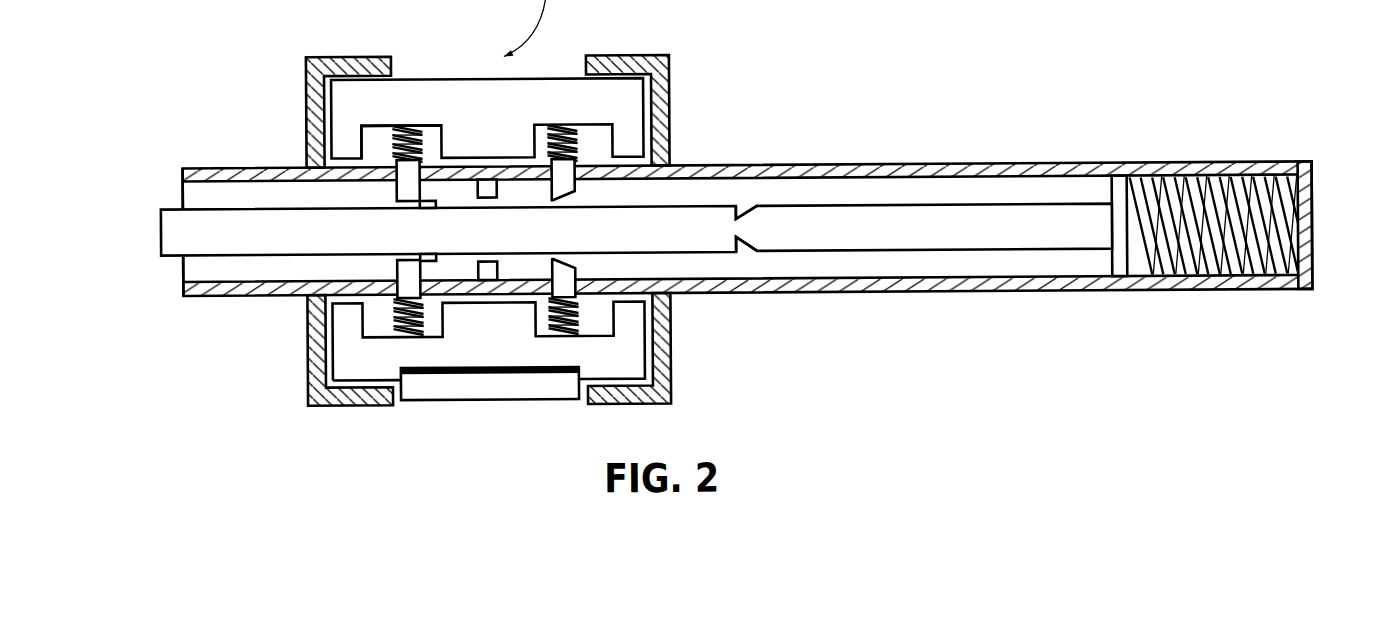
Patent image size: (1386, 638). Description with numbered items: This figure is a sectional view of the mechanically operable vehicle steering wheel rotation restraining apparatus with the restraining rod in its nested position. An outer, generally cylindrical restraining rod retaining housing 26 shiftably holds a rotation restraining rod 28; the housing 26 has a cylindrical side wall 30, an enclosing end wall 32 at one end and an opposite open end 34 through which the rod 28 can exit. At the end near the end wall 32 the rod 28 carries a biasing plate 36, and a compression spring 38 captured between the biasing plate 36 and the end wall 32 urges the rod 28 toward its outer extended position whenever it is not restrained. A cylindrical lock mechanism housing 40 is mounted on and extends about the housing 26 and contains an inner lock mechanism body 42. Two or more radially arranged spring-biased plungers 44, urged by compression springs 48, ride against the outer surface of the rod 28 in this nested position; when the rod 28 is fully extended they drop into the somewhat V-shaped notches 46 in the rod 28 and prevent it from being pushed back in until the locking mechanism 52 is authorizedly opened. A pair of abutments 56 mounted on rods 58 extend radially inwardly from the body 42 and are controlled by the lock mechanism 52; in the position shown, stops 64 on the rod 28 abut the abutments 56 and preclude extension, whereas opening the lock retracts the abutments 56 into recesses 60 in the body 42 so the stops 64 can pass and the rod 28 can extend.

The restraining rod retaining housing 26 is at (827, 147).
The rotation restraining rod 28 is at (162, 219).
The side wall 30 is at (992, 164).
The end wall 32 is at (1312, 221).
The open end 34 is at (182, 188).
The biasing plate 36 is at (1118, 190).
The compression spring 38 is at (1247, 188).
The lock mechanism housing 40 is at (670, 83).
The lock mechanism body 42 is at (478, 86).
The spring-biased plungers 44 is at (560, 124).
The notches 46 is at (745, 248).
The compression springs 48 is at (548, 139).
The locking mechanism 52 is at (507, 387).
The abutments 56 is at (398, 206).
The rods 58 is at (409, 123).
The recesses 60 is at (379, 123).
The stops 64 is at (432, 201).